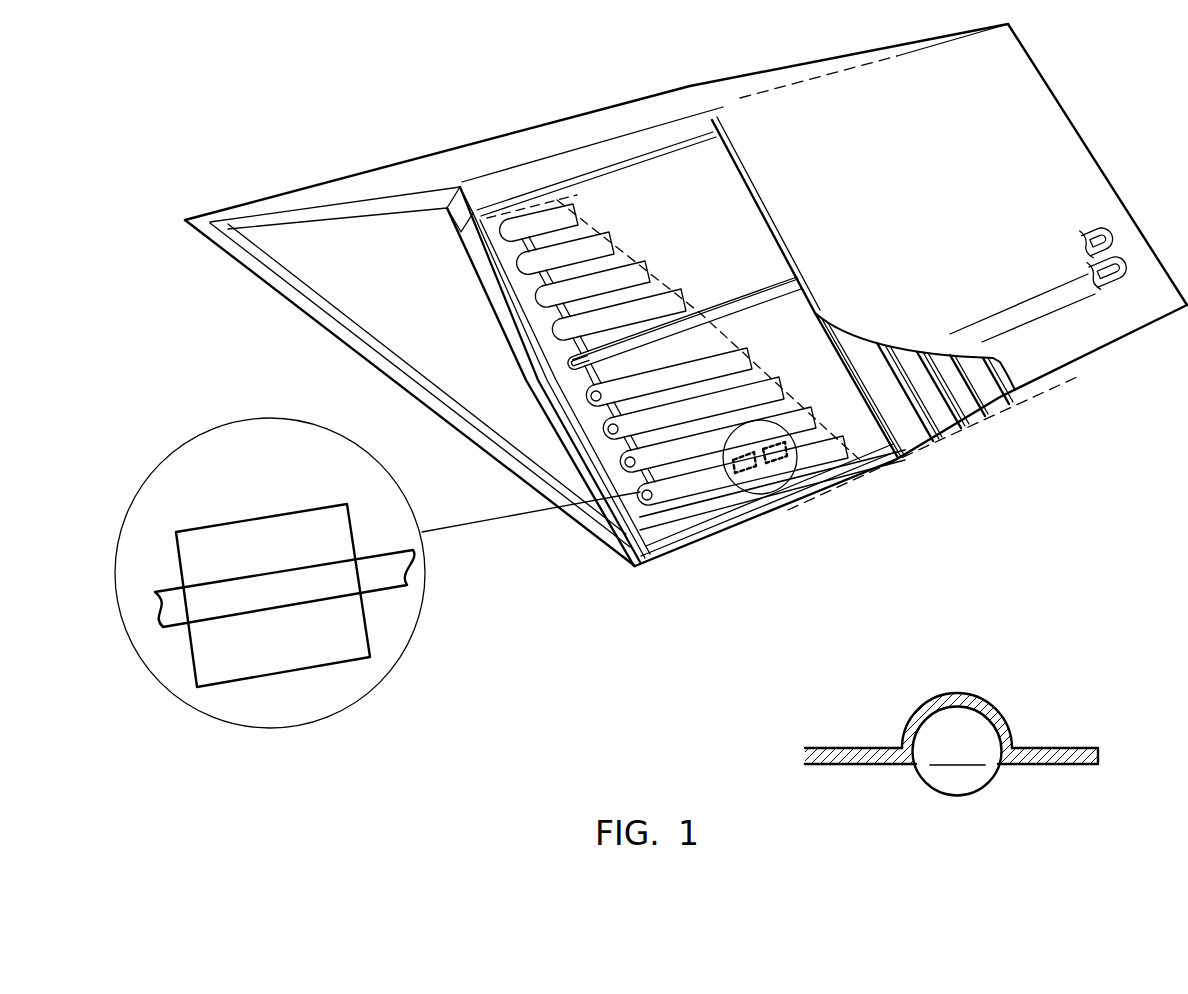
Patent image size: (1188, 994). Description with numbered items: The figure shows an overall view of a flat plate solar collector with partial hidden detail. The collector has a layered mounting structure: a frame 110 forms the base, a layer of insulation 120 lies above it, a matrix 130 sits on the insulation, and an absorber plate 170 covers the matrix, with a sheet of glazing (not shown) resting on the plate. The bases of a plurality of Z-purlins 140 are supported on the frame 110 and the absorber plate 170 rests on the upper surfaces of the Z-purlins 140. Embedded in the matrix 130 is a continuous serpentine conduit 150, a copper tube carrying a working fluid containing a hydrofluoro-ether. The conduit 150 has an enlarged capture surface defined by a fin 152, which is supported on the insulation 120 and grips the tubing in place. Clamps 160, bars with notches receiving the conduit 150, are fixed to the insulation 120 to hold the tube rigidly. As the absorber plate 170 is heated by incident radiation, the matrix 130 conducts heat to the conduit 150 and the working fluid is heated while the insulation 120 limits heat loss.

The frame 110 is at (335, 193).
The layer of insulation 120 is at (517, 185).
The matrix 130 is at (602, 197).
The Z-purlins 140 is at (653, 157).
The conduit 150 is at (633, 513).
The fin 152 is at (288, 655).
The clamps 160 is at (670, 508).
The absorber plate 170 is at (910, 440).